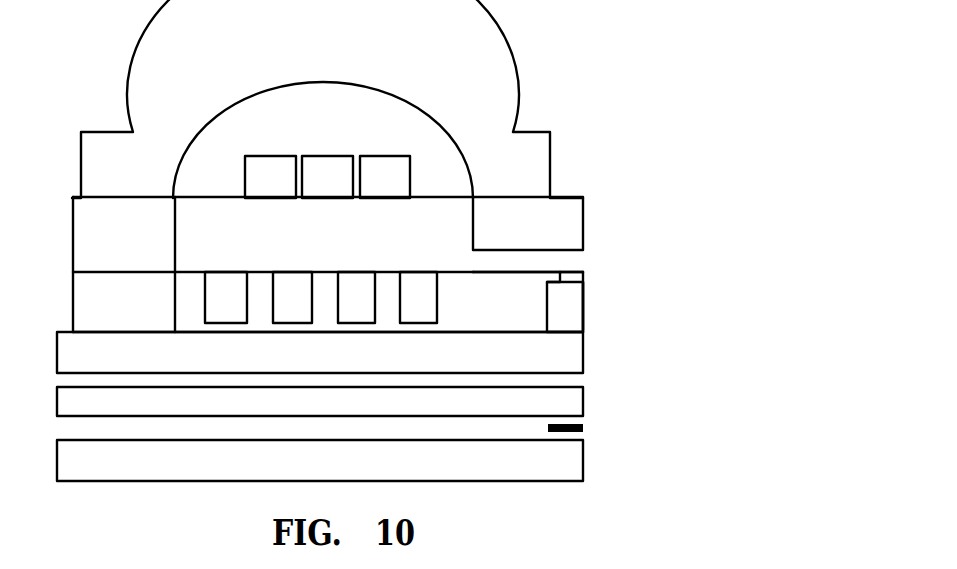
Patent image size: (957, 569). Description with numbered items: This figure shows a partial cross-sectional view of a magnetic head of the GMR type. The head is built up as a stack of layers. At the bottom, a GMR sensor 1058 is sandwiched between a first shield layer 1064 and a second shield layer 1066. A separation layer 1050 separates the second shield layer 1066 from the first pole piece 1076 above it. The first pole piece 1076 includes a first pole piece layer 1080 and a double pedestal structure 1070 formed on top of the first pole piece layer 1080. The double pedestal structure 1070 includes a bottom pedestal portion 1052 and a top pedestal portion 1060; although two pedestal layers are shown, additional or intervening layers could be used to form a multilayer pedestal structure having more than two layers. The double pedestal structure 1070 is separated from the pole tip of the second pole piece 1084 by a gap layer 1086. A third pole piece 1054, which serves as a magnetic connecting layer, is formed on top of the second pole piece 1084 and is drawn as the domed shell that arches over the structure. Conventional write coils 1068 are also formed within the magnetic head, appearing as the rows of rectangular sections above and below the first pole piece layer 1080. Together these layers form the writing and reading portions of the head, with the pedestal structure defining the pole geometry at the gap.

The separation layer 1050 is at (618, 378).
The bottom pedestal portion 1052 is at (585, 306).
The third pole piece 1054 is at (475, 73).
The GMR sensor 1058 is at (618, 427).
The top pedestal portion 1060 is at (587, 278).
The first shield layer 1064 is at (583, 465).
The second shield layer 1066 is at (572, 402).
The write coils 1068 is at (312, 212).
The double pedestal structure 1070 is at (789, 259).
The first pole piece 1076 is at (676, 322).
The first pole piece layer 1080 is at (577, 350).
The second pole piece 1084 is at (565, 212).
The gap layer 1086 is at (603, 252).